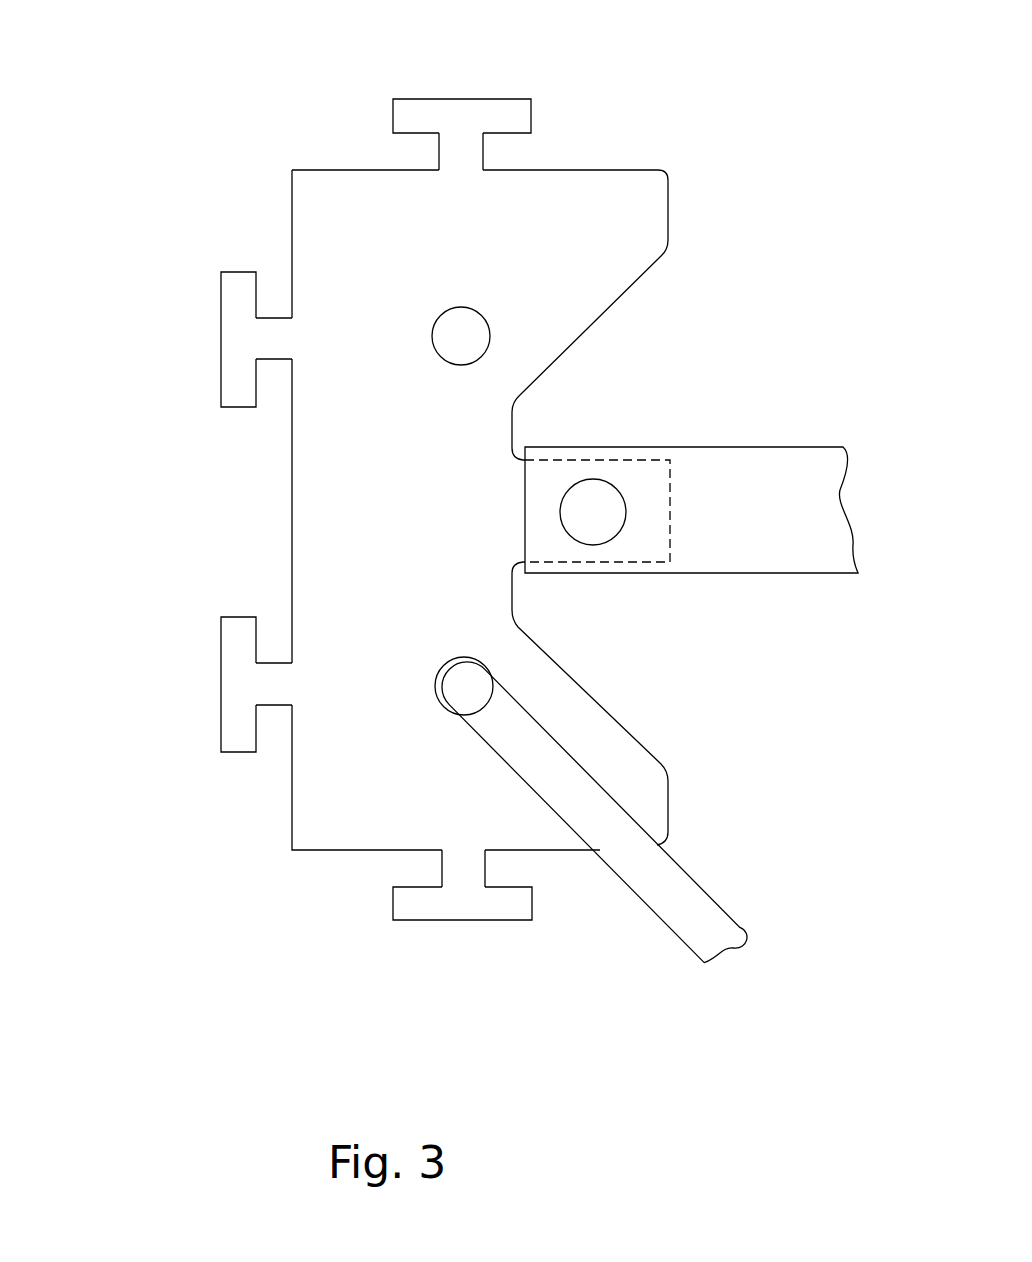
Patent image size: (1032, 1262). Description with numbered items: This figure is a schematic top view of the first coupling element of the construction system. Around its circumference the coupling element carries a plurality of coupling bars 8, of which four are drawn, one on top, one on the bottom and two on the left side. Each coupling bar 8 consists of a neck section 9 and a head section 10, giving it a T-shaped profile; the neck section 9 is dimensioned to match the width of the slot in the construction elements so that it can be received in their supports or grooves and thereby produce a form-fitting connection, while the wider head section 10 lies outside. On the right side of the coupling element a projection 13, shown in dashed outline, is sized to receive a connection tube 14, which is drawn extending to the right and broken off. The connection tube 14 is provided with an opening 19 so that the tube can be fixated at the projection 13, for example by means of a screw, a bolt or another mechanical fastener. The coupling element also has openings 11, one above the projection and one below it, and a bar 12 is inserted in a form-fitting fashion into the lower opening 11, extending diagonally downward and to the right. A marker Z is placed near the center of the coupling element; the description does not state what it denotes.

The coupling bar 8 is at (424, 84).
The neck section 9 is at (485, 152).
The head section 10 is at (517, 113).
The opening 11 is at (490, 338).
The bar 12 is at (702, 928).
The projection 13 is at (655, 528).
The connection tube 14 is at (758, 530).
The opening 19 is at (597, 505).
The center marker Z is at (385, 524).